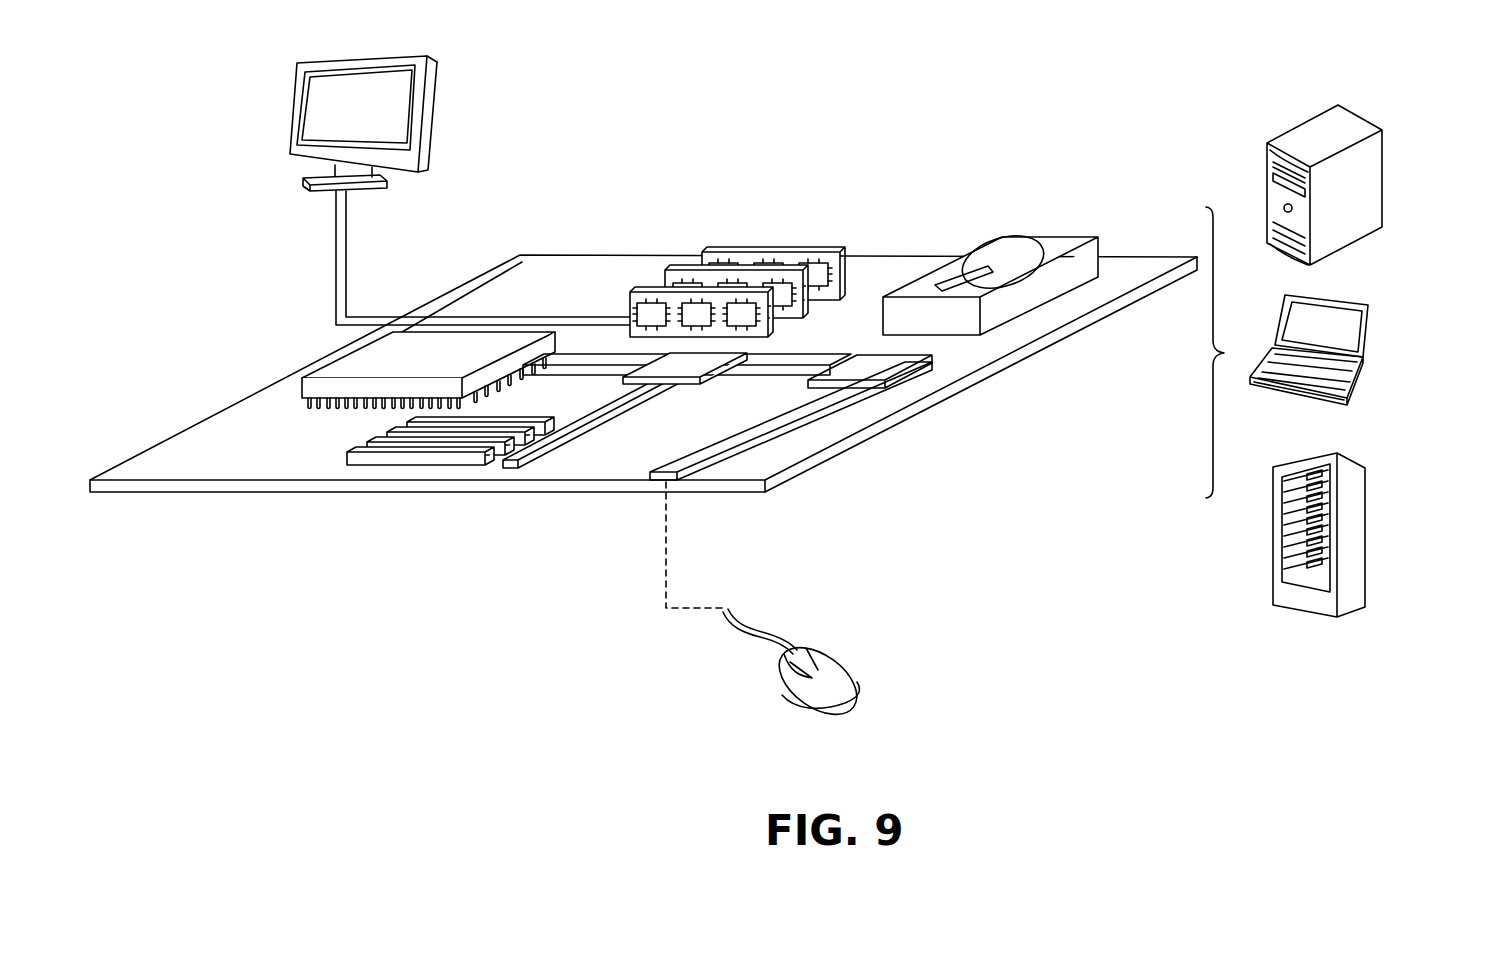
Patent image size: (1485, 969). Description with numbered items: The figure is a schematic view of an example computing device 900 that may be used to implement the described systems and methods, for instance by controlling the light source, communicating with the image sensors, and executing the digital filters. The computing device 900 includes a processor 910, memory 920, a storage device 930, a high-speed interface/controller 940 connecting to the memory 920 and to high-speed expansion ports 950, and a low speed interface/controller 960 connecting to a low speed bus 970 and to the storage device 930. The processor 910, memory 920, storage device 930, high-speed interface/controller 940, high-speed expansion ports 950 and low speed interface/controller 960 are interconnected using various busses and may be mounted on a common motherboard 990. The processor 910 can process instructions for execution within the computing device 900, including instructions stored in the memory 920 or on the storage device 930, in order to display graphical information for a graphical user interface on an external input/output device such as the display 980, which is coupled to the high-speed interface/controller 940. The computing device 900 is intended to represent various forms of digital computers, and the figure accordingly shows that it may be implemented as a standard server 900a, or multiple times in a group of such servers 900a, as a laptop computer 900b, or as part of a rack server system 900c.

The computing device 900 is at (683, 128).
The standard server 900a is at (1367, 175).
The laptop computer 900b is at (1367, 333).
The rack server system 900c is at (1352, 558).
The processor 910 is at (301, 382).
The memory 920 is at (793, 252).
The storage device 930 is at (1045, 237).
The high-speed interface/controller 940 is at (689, 393).
The high-speed expansion ports 950 is at (420, 461).
The low speed interface/controller 960 is at (893, 362).
The low speed bus 970 is at (787, 421).
The display 980 is at (292, 117).
The motherboard 990 is at (670, 488).